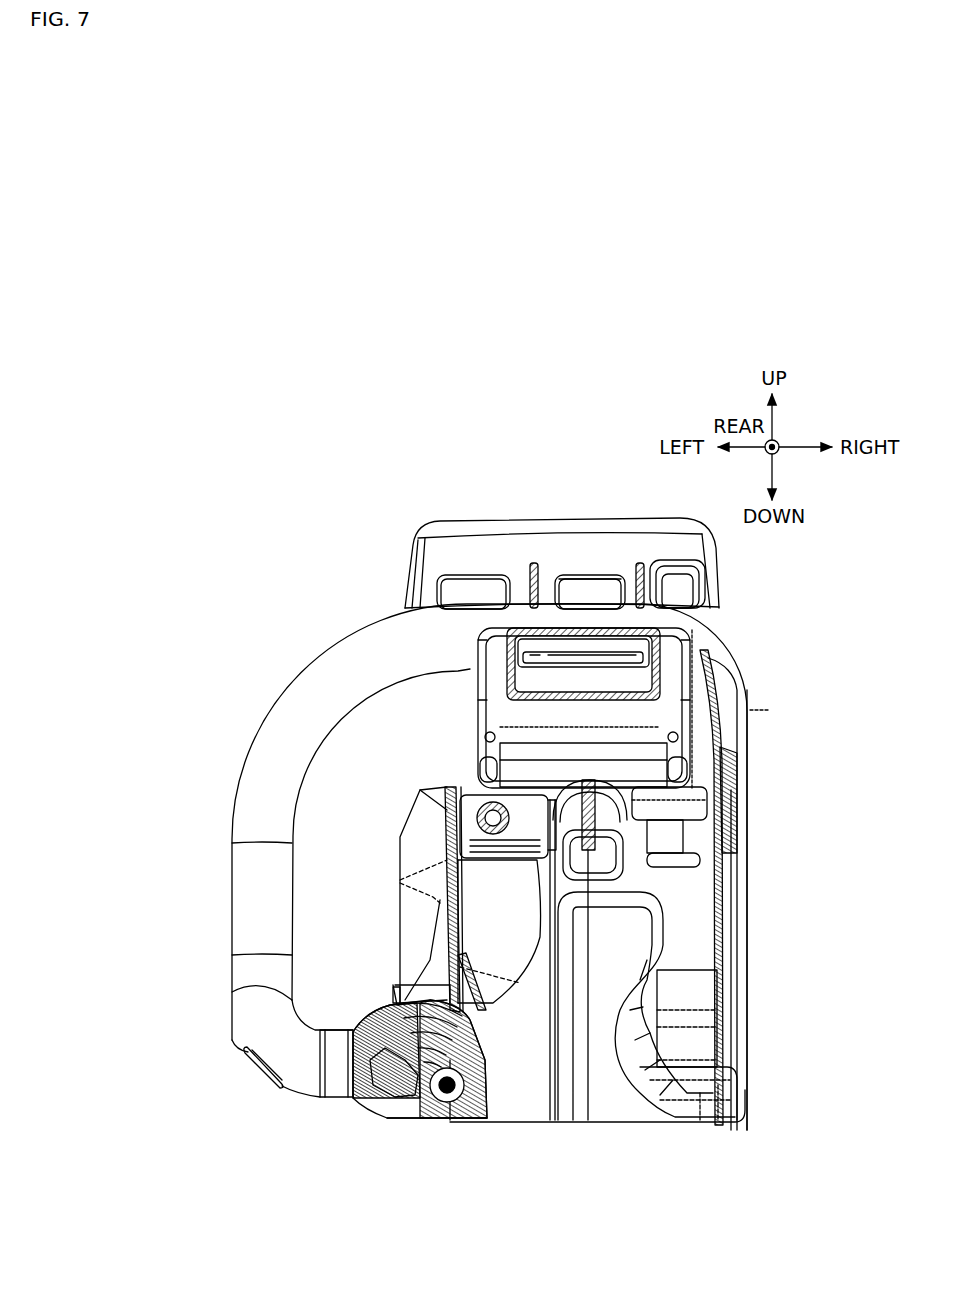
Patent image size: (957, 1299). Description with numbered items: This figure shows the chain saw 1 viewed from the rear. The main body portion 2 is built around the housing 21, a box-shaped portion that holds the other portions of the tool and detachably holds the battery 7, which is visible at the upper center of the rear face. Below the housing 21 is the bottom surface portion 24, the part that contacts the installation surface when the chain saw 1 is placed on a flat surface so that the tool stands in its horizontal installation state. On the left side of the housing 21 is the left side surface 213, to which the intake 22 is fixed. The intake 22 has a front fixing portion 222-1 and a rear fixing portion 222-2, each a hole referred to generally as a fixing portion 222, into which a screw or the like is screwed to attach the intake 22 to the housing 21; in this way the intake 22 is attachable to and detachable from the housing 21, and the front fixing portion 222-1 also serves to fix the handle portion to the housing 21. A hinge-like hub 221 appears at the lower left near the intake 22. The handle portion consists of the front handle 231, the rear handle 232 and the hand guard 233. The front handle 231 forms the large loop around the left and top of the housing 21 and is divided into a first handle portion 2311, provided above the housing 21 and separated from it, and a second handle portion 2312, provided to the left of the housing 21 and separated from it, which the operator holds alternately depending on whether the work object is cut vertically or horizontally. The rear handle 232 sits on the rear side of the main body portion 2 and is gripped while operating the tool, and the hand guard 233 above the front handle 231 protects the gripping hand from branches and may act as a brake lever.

The chain saw 1 is at (272, 500).
The main body portion 2 is at (772, 853).
The battery 7 is at (683, 678).
The housing 21 is at (683, 905).
The intake 22 is at (473, 1100).
The bottom surface portion 24 is at (613, 1123).
The left side surface 213 is at (405, 985).
The hinge shaft 221 is at (380, 1070).
The fixing portion 222 is at (375, 1143).
The front fixing portion 222-1 is at (240, 1072).
The rear fixing portion 222-2 is at (417, 1120).
The front handle 231 is at (440, 867).
The rear handle 232 is at (635, 810).
The hand guard 233 is at (434, 523).
The first handle portion 2311 is at (581, 605).
The second handle portion 2312 is at (232, 874).